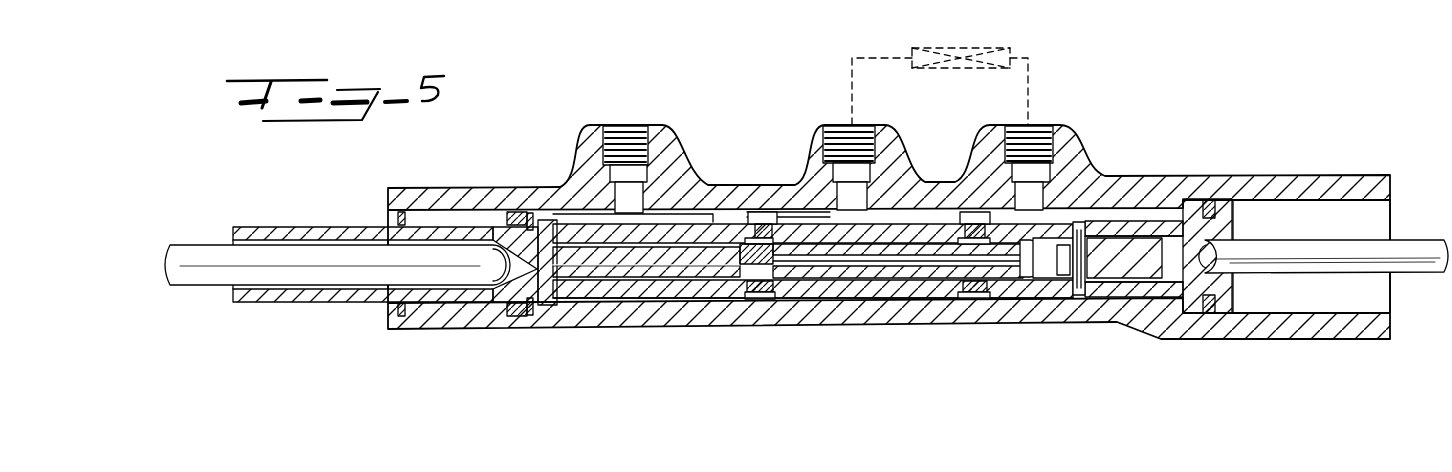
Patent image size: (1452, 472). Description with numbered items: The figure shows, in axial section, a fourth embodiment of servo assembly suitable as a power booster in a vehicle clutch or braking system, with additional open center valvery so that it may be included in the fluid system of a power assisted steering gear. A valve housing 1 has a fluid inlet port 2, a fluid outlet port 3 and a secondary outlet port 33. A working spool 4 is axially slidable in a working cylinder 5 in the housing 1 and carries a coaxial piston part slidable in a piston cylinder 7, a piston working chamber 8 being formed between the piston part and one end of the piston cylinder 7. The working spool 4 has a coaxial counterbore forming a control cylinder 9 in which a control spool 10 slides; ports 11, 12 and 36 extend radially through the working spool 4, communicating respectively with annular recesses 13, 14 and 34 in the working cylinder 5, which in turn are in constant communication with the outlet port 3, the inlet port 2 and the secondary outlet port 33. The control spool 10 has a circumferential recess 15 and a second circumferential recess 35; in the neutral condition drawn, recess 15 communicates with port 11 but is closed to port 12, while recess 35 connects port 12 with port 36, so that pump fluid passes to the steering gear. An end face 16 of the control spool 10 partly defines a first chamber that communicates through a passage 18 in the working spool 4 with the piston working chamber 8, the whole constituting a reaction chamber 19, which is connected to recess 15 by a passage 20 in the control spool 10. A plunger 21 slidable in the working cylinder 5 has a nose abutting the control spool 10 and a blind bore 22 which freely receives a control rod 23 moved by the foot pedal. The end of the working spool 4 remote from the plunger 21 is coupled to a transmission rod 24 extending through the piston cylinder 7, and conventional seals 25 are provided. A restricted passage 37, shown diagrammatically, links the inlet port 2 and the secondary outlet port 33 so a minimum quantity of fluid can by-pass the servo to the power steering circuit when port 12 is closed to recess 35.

The valve housing 1 is at (429, 188).
The fluid inlet port 2 is at (860, 132).
The fluid outlet port 3 is at (638, 137).
The working spool 4 is at (864, 289).
The working cylinder 5 is at (913, 291).
The piston cylinder 7 is at (1317, 315).
The piston working chamber 8 is at (1190, 309).
The control cylinder 9 is at (684, 277).
The control spool 10 is at (637, 274).
The port 11 is at (552, 226).
The port 12 is at (766, 237).
The annular recess 13 is at (578, 221).
The annular recess 14 is at (792, 217).
The circumferential recess 15 is at (600, 281).
The end face 16 is at (1228, 297).
The passage 18 is at (1122, 279).
The reaction chamber 19 is at (1062, 224).
The passage 20 is at (792, 262).
The plunger 21 is at (307, 226).
The blind bore 22 is at (222, 238).
The control rod 23 is at (208, 262).
The transmission rod 24 is at (1412, 250).
The pressure seals 25 is at (513, 306).
The secondary outlet port 33 is at (1043, 133).
The annular recess 34 is at (978, 213).
The second circumferential recess 35 is at (834, 275).
The port 36 is at (975, 222).
The restricted passage 37 is at (993, 47).